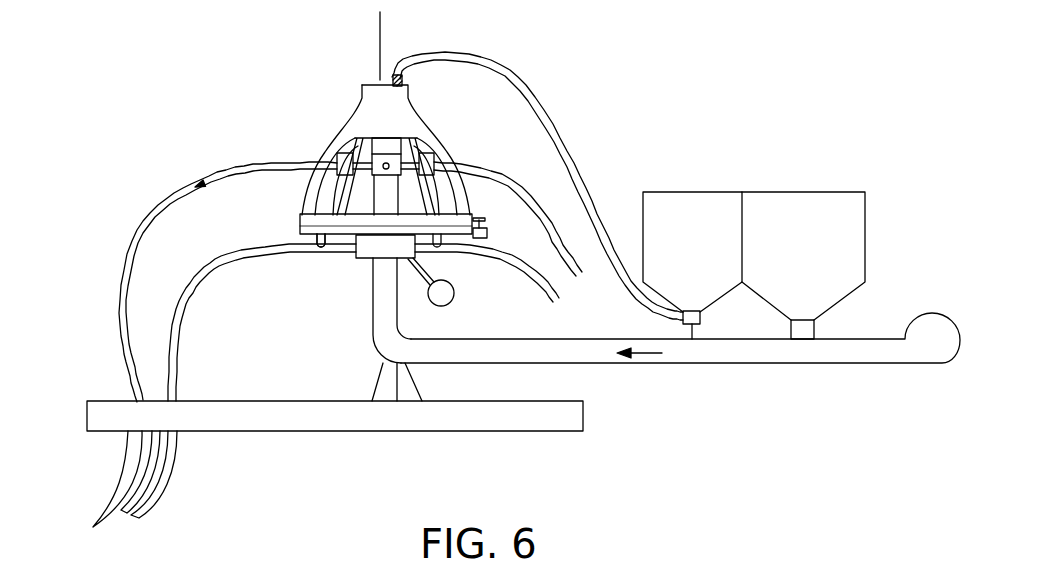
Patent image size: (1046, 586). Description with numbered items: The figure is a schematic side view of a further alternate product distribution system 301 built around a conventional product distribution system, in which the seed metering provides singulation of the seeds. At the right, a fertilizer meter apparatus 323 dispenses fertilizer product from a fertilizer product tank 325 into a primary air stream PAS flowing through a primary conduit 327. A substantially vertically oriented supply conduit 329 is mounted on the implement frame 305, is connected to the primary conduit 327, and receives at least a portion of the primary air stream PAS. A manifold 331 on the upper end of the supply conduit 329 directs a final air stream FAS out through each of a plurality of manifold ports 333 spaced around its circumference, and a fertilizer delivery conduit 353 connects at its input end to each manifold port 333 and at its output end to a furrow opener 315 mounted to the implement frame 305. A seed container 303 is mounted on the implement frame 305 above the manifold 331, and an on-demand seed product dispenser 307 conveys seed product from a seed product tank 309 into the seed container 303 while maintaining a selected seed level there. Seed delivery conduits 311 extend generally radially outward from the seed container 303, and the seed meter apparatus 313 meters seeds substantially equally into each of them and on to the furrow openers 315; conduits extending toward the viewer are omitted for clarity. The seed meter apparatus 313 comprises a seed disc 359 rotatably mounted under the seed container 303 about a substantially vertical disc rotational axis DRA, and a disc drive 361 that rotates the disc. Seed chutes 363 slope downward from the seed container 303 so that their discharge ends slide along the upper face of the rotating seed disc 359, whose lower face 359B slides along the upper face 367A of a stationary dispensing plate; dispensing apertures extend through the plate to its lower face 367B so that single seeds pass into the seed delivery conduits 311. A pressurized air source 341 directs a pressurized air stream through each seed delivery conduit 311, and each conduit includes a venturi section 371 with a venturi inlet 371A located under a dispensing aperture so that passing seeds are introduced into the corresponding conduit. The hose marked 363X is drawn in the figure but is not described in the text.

The product distribution system 301 is at (804, 102).
The seed container 303 is at (357, 105).
The implement frame 305 is at (557, 432).
The on-demand seed product dispenser 307 is at (692, 325).
The seed product tank 309 is at (677, 192).
The seed delivery conduits 311 is at (213, 273).
The seed meter apparatus 313 is at (300, 224).
The furrow opener 315 is at (123, 468).
The fertilizer meter apparatus 323 is at (815, 330).
The fertilizer product tank 325 is at (825, 192).
The primary conduit 327 is at (807, 365).
The supply conduit 329 is at (370, 332).
The manifold 331 is at (340, 150).
The manifold ports 333 is at (389, 163).
The pressurized air source 341 is at (451, 302).
The fertilizer delivery conduit 353 is at (160, 213).
The seed disc 359 is at (447, 213).
The lower face of the seed disc 359B is at (341, 295).
The disc drive 361 is at (488, 234).
The seed chutes 363 is at (302, 190).
The rod hose extension 363X is at (507, 177).
The upper face of the dispensing plate 367A is at (365, 237).
The lower face of the dispensing plate 367B is at (320, 247).
The venturi section 371 is at (337, 226).
The venturi inlet 371A is at (438, 247).
The disc rotational axis DRA is at (383, 30).
The final air stream FAS is at (215, 176).
The primary air stream PAS is at (650, 358).